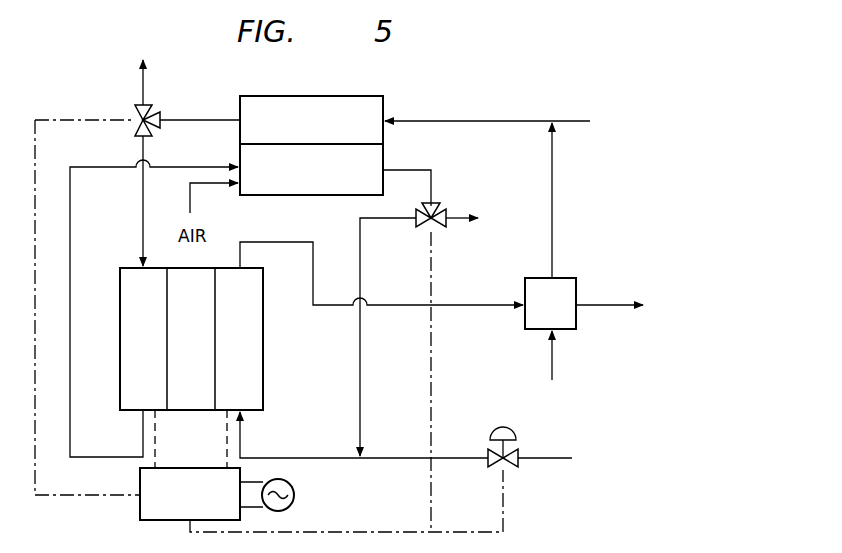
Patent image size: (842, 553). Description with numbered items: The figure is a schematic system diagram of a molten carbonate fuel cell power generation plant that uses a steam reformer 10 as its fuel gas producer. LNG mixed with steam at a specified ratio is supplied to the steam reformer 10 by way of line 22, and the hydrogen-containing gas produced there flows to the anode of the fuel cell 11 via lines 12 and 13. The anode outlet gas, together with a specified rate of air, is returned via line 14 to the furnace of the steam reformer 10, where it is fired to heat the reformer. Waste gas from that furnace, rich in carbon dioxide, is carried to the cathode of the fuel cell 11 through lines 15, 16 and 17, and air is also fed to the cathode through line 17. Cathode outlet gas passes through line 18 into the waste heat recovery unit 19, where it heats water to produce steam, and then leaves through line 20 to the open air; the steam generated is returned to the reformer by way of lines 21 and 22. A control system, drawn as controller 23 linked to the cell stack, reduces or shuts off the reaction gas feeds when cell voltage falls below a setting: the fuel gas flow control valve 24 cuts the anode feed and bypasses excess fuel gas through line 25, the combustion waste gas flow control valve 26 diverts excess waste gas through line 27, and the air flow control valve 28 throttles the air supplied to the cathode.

The steam reformer 10 is at (378, 96).
The fuel cell 11 is at (263, 358).
The line 12 is at (192, 119).
The line 13 is at (143, 199).
The line 14 is at (70, 287).
The line 15 is at (396, 170).
The line 16 is at (360, 370).
The line 17 is at (381, 458).
The line 18 is at (454, 305).
The waste heat recovery unit 19 is at (565, 278).
The line 20 is at (596, 305).
The line 21 is at (552, 215).
The line 22 is at (489, 121).
The controller 23 is at (179, 468).
The fuel gas flow control valve 24 is at (152, 113).
The line 25 is at (145, 88).
The combustion waste gas flow control valve 26 is at (439, 207).
The line 27 is at (470, 217).
The air flow control valve 28 is at (520, 452).